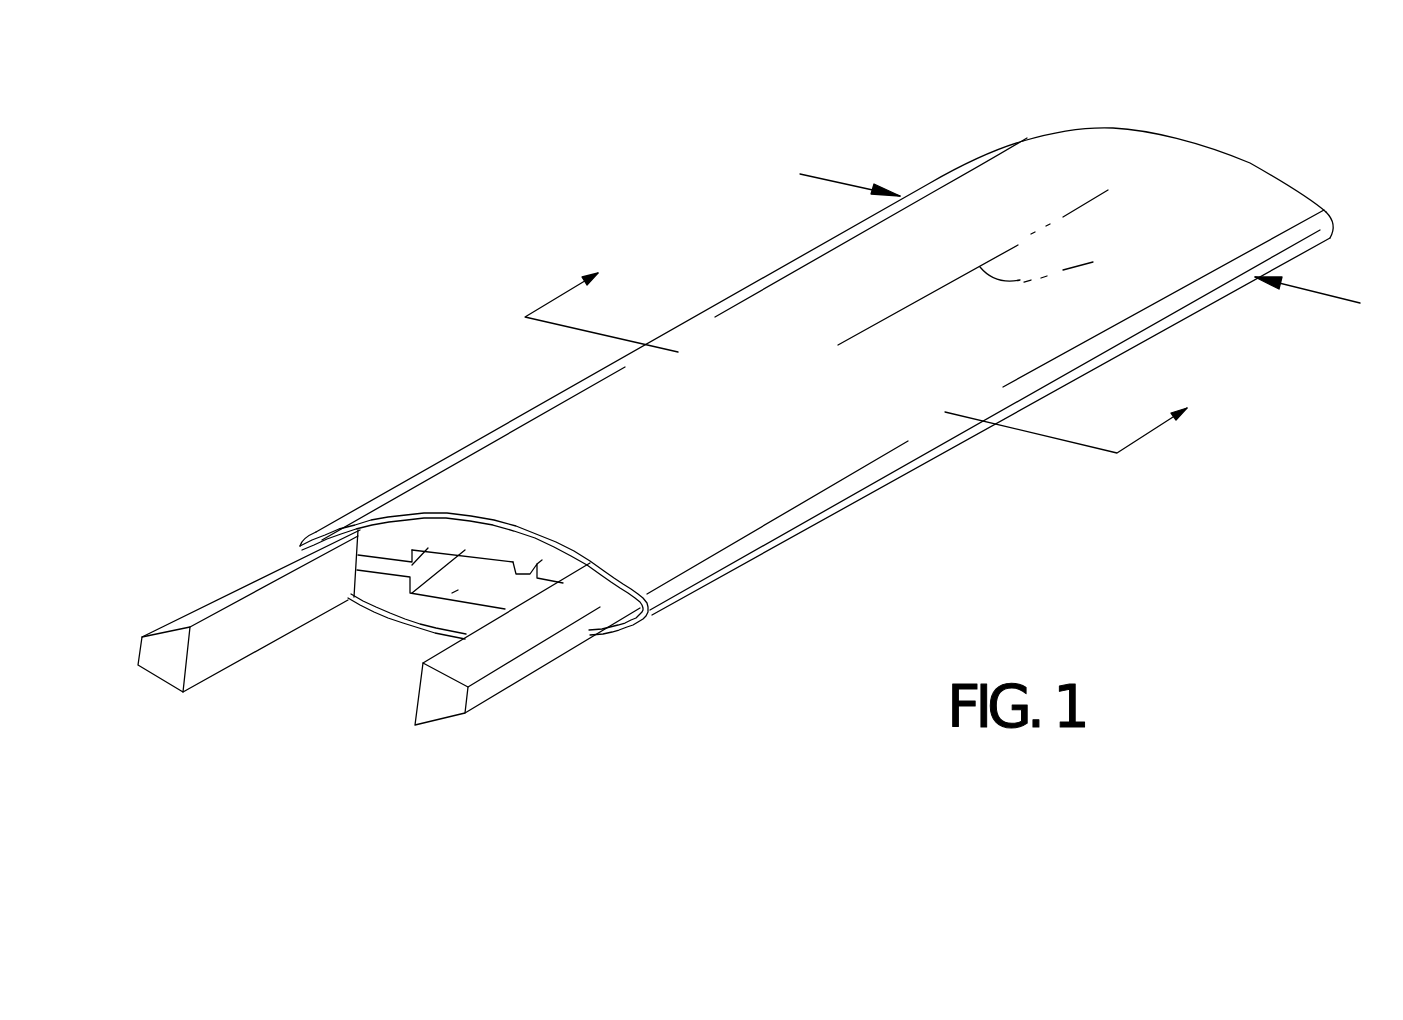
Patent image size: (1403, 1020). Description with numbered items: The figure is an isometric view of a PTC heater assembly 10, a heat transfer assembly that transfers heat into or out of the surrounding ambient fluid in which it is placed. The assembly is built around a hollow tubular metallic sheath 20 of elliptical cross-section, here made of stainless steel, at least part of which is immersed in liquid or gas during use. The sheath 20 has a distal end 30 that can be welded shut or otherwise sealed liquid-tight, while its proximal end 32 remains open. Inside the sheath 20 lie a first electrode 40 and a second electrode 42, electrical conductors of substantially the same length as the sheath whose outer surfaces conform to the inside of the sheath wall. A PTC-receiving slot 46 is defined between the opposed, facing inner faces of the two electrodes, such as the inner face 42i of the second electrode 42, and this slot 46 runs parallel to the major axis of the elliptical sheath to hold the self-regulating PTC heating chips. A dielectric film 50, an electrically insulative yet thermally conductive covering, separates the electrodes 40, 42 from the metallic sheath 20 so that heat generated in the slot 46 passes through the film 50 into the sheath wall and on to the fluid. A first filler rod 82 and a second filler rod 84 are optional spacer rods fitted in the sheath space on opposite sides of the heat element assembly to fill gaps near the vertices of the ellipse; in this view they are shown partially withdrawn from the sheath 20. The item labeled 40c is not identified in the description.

The heater assembly 10 is at (987, 142).
The sheath 20 is at (862, 482).
The distal end 30 is at (1328, 222).
The proximal end 32 is at (657, 610).
The first electrode 40 is at (395, 537).
The block channel 40c is at (537, 565).
The second electrode 42 is at (370, 592).
The inner face of second electrode 42i is at (452, 593).
The PTC-receiving slot 46 is at (487, 575).
The dielectric film 50 is at (480, 520).
The first filler rod 82 is at (168, 655).
The second filler rod 84 is at (478, 690).